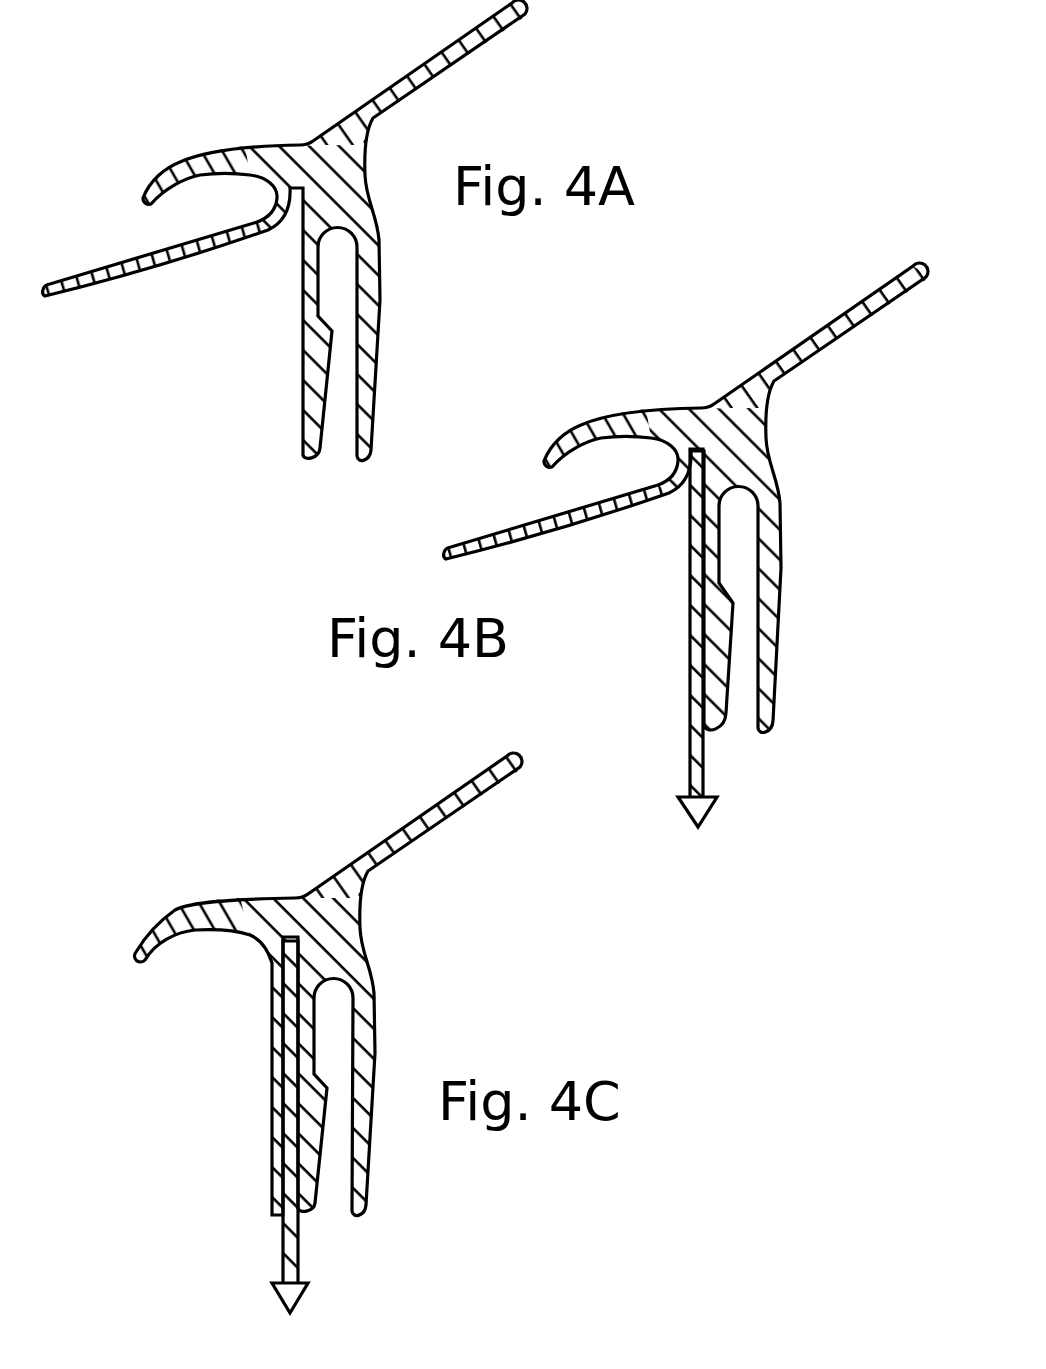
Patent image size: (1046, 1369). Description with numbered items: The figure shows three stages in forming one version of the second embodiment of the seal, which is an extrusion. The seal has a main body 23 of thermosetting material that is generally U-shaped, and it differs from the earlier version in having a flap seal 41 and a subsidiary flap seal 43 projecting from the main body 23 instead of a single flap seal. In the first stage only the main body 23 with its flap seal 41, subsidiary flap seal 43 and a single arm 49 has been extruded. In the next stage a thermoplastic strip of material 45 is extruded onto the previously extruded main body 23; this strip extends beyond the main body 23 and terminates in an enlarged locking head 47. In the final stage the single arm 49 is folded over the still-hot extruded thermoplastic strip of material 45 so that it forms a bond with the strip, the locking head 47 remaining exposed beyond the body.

In FIG. 4A, the main body 23 is at (286, 230).
In FIG. 4B, the main body 23 is at (687, 497).
In FIG. 4C, the main body 23 is at (329, 984).
In FIG. 4A, the flap seal 41 is at (470, 63).
In FIG. 4B, the flap seal 41 is at (860, 327).
In FIG. 4C, the flap seal 41 is at (460, 800).
In FIG. 4A, the subsidiary flap seal 43 is at (228, 157).
In FIG. 4B, the subsidiary flap seal 43 is at (630, 423).
In FIG. 4C, the subsidiary flap seal 43 is at (237, 910).
In FIG. 4B, the thermoplastic strip of material 45 is at (697, 627).
In FIG. 4C, the thermoplastic strip of material 45 is at (295, 1250).
In FIG. 4B, the enlarged locking head 47 is at (713, 808).
In FIG. 4C, the enlarged locking head 47 is at (293, 1291).
In FIG. 4A, the arm 49 is at (160, 262).
In FIG. 4B, the arm 49 is at (547, 528).
In FIG. 4C, the arm 49 is at (270, 1048).